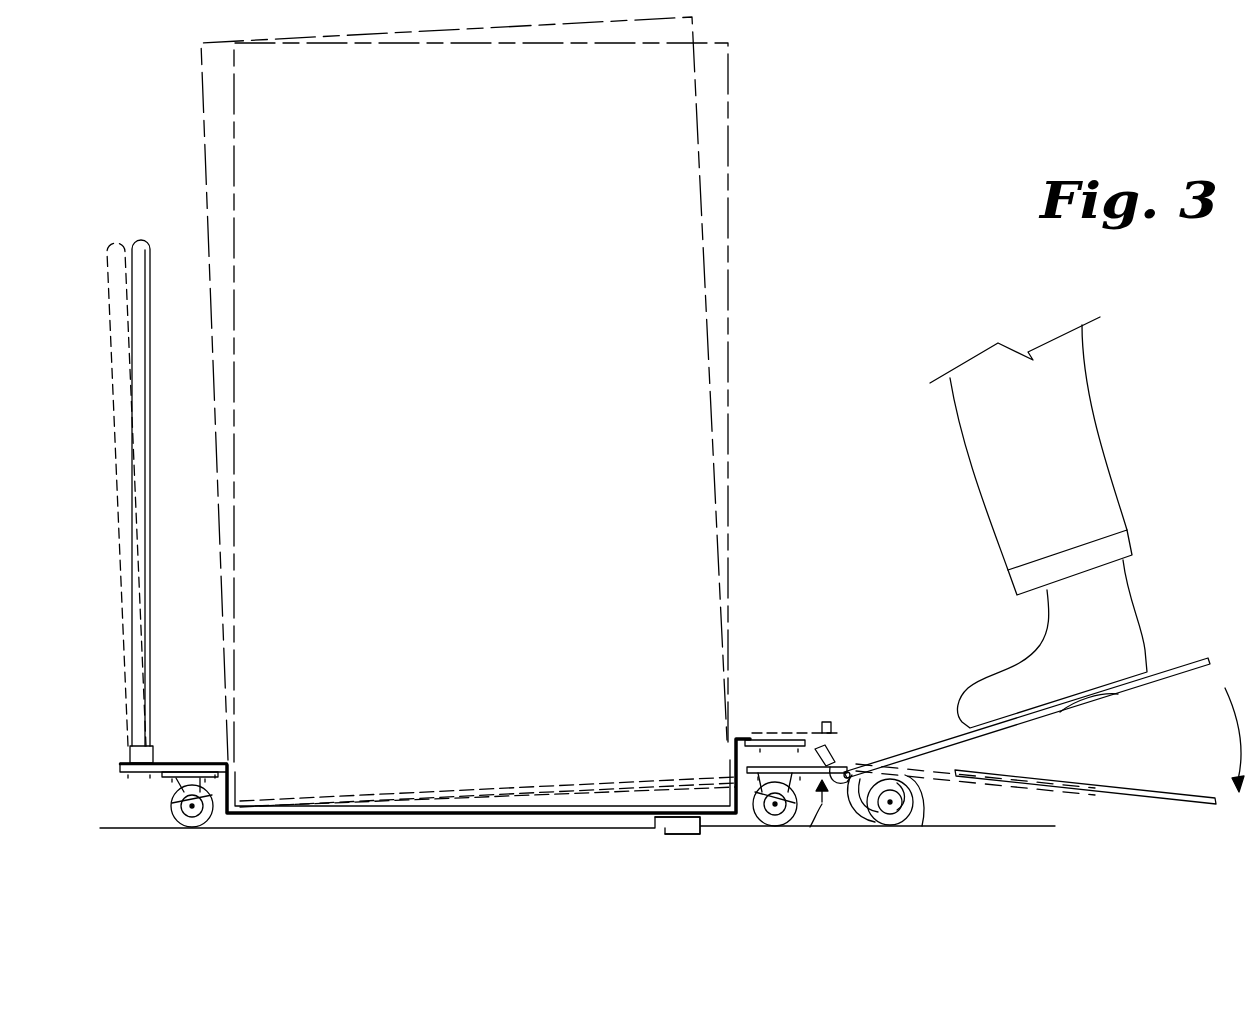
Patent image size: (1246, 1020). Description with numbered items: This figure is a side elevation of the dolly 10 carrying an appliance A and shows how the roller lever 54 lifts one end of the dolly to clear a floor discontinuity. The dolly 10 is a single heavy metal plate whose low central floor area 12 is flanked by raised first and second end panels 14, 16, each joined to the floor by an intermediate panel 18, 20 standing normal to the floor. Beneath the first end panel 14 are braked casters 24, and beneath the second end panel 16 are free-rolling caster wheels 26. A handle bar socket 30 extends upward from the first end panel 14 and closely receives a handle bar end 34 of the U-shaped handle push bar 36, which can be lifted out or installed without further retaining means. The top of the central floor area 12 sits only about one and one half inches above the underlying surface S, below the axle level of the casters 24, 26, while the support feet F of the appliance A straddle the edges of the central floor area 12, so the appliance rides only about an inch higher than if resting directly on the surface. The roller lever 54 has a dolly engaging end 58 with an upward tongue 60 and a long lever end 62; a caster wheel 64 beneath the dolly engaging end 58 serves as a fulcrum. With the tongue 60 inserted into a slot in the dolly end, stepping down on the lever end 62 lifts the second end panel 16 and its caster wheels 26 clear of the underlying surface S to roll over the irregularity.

The appliance A is at (696, 66).
The underlying surface S is at (460, 828).
The support feet F is at (255, 822).
The dolly 10 is at (814, 580).
The central floor area 12 is at (515, 805).
The first end panel 14 is at (188, 763).
The second end panel 16 is at (765, 742).
The intermediate panel 18 is at (226, 815).
The intermediate panel 20 is at (740, 815).
The casters 24 is at (180, 825).
The second end caster wheels 26 is at (790, 828).
The handle bar socket 30 is at (130, 752).
The handle bar end 34 is at (150, 630).
The handle push bar 36 is at (138, 242).
The roller lever 54 is at (1140, 680).
The dolly engaging end 58 is at (862, 830).
The tongue 60 is at (835, 735).
The lever end 62 is at (1197, 672).
The caster wheel 64 is at (915, 826).